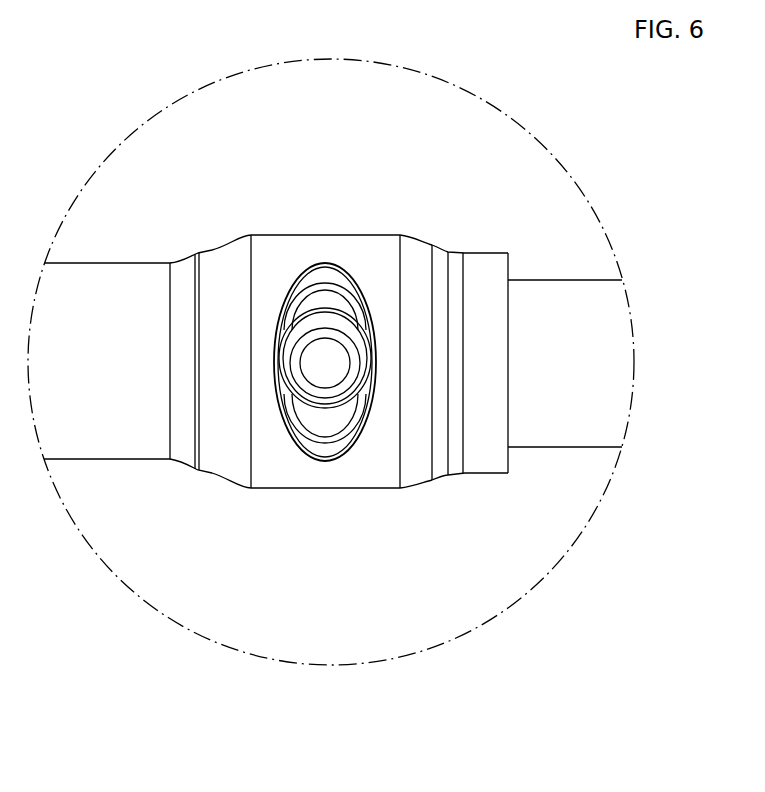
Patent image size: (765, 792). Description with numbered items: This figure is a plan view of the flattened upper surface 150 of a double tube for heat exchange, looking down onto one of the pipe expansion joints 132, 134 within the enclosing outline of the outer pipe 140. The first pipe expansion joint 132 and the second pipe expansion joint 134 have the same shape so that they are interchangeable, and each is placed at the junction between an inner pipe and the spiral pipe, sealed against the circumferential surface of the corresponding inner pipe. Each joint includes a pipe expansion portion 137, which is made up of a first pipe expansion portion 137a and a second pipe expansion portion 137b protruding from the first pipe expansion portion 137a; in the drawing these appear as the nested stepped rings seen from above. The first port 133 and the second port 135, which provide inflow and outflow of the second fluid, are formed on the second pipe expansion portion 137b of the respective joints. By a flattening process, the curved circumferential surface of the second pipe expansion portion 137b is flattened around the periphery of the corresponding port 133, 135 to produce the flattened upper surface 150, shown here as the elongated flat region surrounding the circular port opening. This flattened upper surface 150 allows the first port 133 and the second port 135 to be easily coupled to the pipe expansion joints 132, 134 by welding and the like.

The first pipe expansion joint 132 is at (396, 481).
The second pipe expansion joint 134 is at (315, 488).
The first port 133 is at (405, 256).
The second port 135 is at (337, 268).
The pipe expansion portion 137 is at (341, 271).
The first pipe expansion portion 137a is at (320, 247).
The second pipe expansion portion 137b is at (335, 332).
The outer pipe 140 is at (117, 440).
The flattened upper surface 150 is at (320, 297).